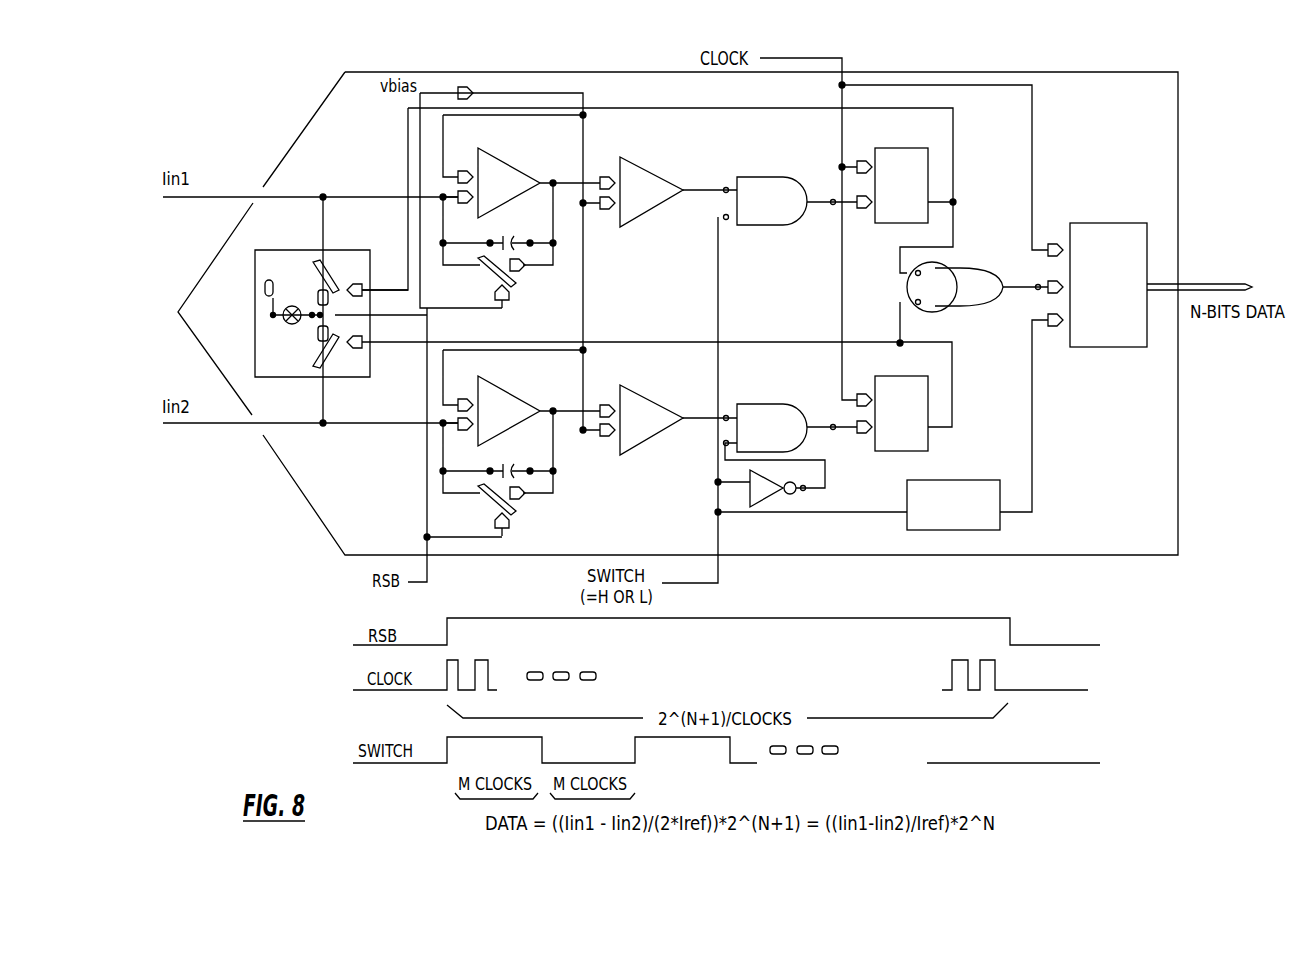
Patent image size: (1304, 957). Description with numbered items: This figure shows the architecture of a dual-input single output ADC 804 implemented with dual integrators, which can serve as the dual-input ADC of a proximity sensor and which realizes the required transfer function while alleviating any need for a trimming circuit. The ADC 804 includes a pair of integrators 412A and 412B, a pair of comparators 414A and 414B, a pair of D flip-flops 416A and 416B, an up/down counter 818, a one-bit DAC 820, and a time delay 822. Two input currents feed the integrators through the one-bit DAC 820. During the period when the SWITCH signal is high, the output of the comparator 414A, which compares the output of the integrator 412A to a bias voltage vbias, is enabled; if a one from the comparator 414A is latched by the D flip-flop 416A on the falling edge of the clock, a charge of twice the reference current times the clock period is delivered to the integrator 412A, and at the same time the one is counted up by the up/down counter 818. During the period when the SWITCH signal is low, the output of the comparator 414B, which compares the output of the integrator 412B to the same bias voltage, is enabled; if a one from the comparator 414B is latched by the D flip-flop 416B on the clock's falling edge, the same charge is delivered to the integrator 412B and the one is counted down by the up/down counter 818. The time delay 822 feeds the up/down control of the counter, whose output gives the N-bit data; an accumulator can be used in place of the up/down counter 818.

The dual-input single output ADC 804 is at (1180, 115).
The 1-bit DAC 820 is at (332, 306).
The integrator 412A is at (542, 211).
The integrator 412B is at (541, 442).
The comparator 414A is at (646, 223).
The comparator 414B is at (646, 448).
The D flip-flop 416A is at (928, 190).
The D flip-flop 416B is at (928, 410).
The up/down counter 818 is at (1118, 222).
The time delay 822 is at (950, 480).